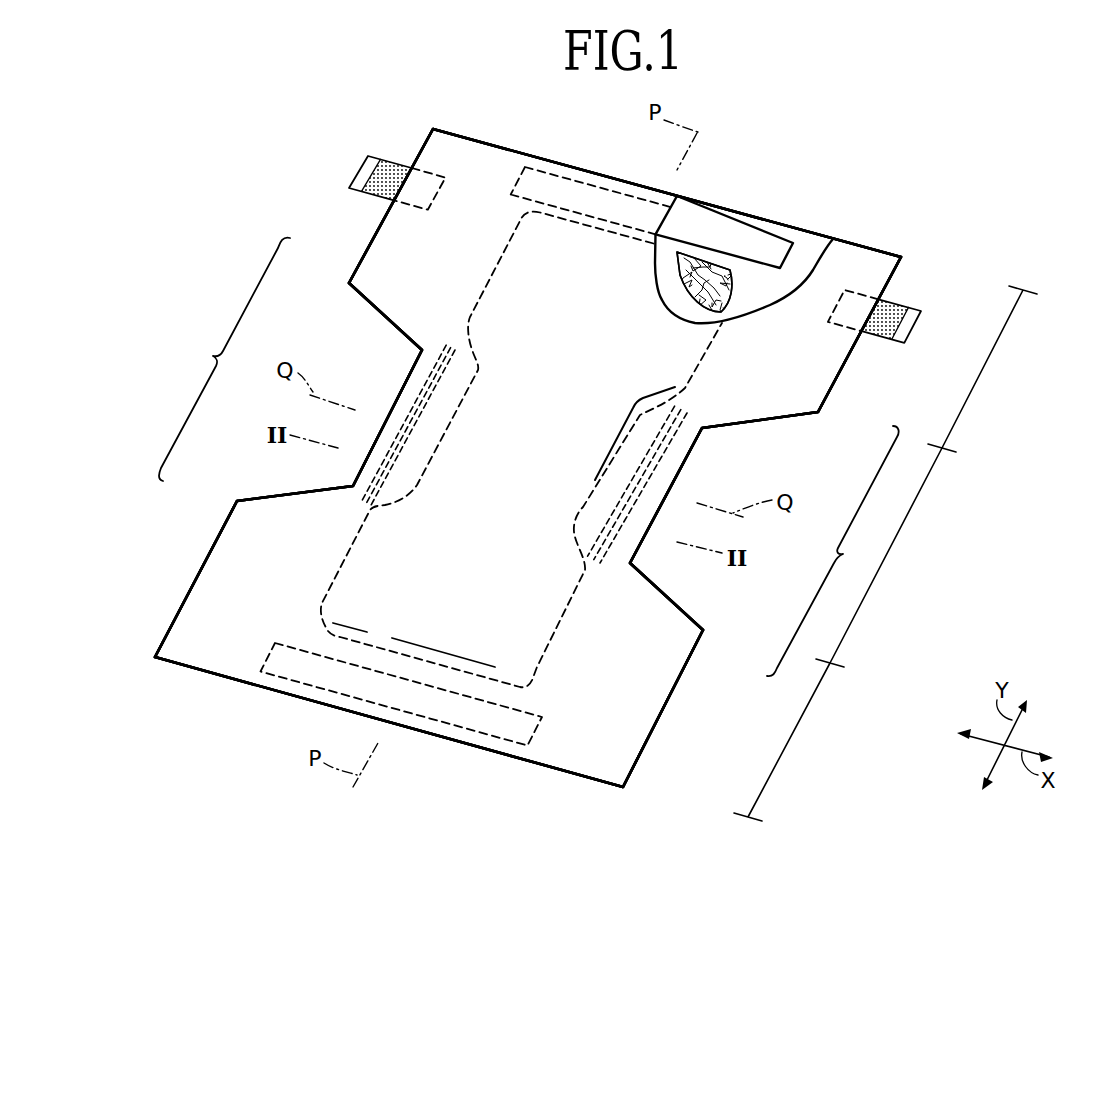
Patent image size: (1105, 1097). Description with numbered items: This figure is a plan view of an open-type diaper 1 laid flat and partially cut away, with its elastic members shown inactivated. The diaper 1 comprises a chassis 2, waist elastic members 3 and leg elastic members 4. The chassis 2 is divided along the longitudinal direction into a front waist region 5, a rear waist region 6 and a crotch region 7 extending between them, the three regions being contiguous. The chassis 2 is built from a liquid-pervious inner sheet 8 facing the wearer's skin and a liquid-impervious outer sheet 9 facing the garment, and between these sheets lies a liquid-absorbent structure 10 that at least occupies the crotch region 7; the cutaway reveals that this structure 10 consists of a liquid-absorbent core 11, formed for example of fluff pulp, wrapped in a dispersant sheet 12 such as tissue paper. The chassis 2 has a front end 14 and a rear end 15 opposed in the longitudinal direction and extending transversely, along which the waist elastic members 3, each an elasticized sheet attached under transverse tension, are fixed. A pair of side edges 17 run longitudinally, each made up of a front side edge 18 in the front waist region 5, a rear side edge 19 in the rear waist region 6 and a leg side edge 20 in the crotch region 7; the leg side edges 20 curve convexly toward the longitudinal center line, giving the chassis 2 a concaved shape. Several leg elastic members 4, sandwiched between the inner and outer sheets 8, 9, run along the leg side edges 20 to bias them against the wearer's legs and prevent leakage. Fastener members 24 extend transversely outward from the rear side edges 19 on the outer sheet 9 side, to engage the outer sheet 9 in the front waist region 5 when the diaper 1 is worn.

The diaper 1 is at (302, 194).
The chassis 2 is at (884, 252).
The waist elastic members 3 is at (682, 225).
The leg elastic members 4 is at (406, 452).
The front waist region 5 is at (793, 737).
The rear waist region 6 is at (985, 365).
The crotch region 7 is at (885, 557).
The inner sheet 8 is at (848, 263).
The outer sheet 9 is at (730, 218).
The liquid-absorbent structure 10 is at (733, 277).
The liquid-absorbent core 11 is at (677, 263).
The dispersant sheet 12 is at (673, 293).
The front end 14 is at (427, 732).
The rear end 15 is at (592, 172).
The side edges 17 is at (529, 457).
The front side edge 18 is at (222, 527).
The rear side edge 19 is at (358, 263).
The leg side edge 20 is at (403, 388).
The fastener members 24 is at (402, 172).